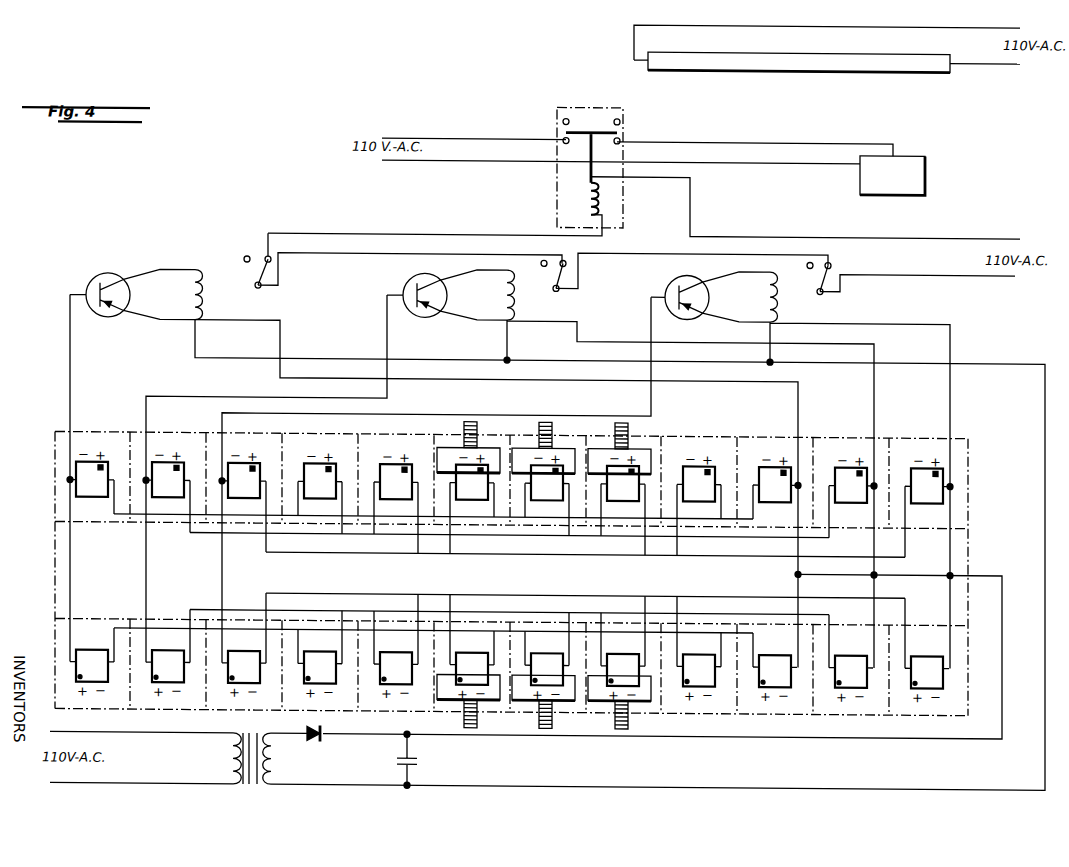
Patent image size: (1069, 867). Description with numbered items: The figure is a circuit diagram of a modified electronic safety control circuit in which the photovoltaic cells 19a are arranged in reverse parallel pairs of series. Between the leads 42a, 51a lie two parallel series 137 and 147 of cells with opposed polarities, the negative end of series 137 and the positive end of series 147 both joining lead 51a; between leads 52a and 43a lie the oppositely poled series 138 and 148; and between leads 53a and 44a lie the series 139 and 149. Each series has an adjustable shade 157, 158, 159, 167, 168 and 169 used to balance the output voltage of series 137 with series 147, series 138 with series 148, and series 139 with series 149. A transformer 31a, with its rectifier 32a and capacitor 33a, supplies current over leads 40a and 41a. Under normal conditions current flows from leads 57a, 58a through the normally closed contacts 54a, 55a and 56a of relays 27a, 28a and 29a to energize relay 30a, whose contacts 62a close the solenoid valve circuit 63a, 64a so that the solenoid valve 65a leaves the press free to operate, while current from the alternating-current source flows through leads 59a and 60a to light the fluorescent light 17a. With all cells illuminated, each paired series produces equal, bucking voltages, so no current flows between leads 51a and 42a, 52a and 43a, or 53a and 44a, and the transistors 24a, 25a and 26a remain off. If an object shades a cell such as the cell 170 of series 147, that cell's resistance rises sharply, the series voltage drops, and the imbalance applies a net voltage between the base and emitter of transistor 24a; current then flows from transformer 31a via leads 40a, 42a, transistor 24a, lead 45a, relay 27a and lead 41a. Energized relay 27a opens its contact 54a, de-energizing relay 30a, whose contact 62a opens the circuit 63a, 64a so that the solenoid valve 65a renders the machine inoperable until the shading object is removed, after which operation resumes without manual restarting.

The fluorescent light 17a is at (886, 65).
The photovoltaic cells 19a is at (232, 682).
The transistor 24a is at (108, 272).
The transistor 25a is at (404, 283).
The transistor 26a is at (666, 286).
The relay 27a is at (207, 295).
The relay 28a is at (490, 318).
The relay 29a is at (777, 300).
The relay 30a is at (556, 203).
The transformer 31a is at (243, 757).
The rectifier 32a is at (320, 741).
The capacitor 33a is at (420, 758).
The lead 40a is at (746, 733).
The lead 41a is at (207, 357).
The lead 42a is at (798, 415).
The lead 43a is at (560, 320).
The lead 44a is at (950, 423).
The lead 45a is at (170, 266).
The lead 51a is at (70, 392).
The lead 52a is at (146, 411).
The lead 53a is at (222, 414).
The normally closed contact 54a is at (252, 246).
The normally closed contact 55a is at (551, 283).
The normally closed contact 56a is at (834, 250).
The lead 57a is at (1010, 270).
The lead 58a is at (1003, 231).
The lead 59a is at (972, 20).
The lead 60a is at (1003, 57).
The contacts 62a is at (626, 123).
The solenoid valve circuit 63a is at (490, 135).
The solenoid valve circuit 64a is at (497, 157).
The solenoid valve 65a is at (927, 163).
The series of photovoltaic cells 137 is at (124, 515).
The series of photovoltaic cells 138 is at (200, 533).
The series of photovoltaic cells 139 is at (288, 551).
The series of photovoltaic cells 147 is at (114, 626).
The series of photovoltaic cells 148 is at (200, 585).
The series of photovoltaic cells 149 is at (340, 591).
The adjustable shade 157 is at (560, 446).
The adjustable shade 158 is at (650, 446).
The adjustable shade 159 is at (450, 444).
The adjustable shade 167 is at (565, 700).
The adjustable shade 168 is at (640, 700).
The adjustable shade 169 is at (490, 700).
The photovoltaic cell 170 is at (108, 682).